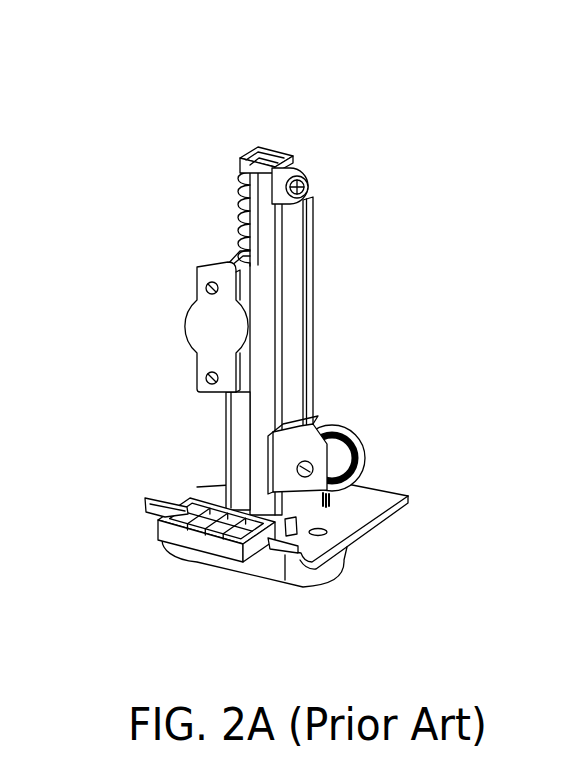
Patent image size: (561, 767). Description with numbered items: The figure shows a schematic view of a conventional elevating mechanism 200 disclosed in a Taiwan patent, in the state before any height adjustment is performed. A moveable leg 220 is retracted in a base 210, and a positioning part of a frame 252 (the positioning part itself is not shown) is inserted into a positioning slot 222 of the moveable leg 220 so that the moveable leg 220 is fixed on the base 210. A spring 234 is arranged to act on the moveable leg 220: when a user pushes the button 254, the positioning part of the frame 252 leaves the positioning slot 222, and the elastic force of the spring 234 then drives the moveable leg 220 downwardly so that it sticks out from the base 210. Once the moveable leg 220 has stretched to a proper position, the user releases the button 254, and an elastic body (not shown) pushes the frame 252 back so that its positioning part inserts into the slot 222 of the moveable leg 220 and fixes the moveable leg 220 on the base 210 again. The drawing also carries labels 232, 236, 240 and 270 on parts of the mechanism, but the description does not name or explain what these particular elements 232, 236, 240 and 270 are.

The elevating mechanism 200 is at (90, 122).
The base 210 is at (344, 352).
The moveable leg 220 is at (287, 150).
The positioning slot 222 is at (233, 210).
The roller holder 232 is at (290, 425).
The spring 234 is at (293, 330).
The roller 236 is at (336, 465).
The fixing bracket 240 is at (175, 292).
The frame 252 is at (193, 490).
The button 254 is at (180, 507).
The base 270 is at (319, 580).